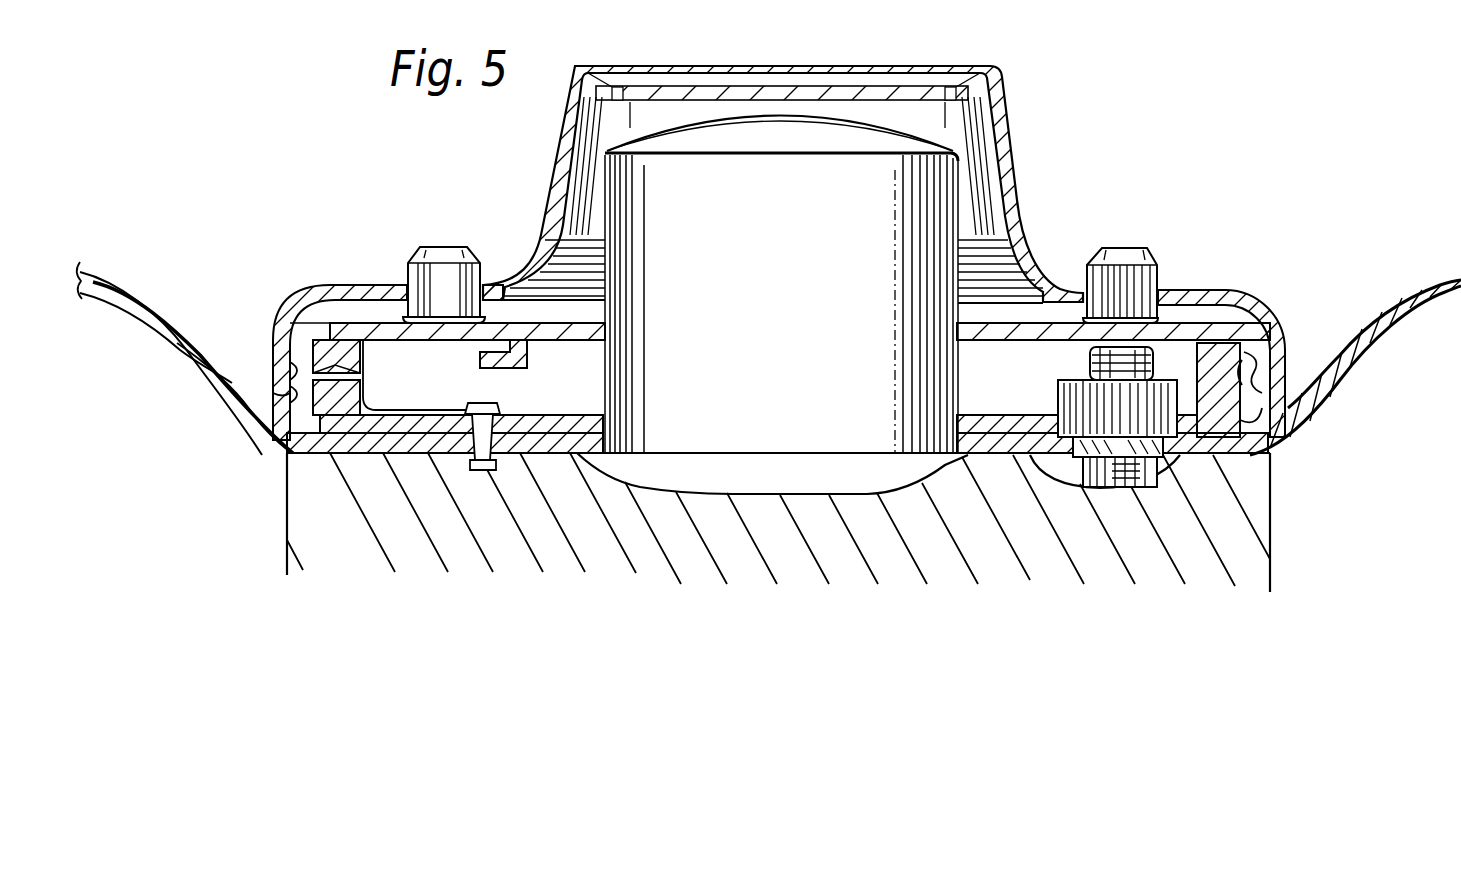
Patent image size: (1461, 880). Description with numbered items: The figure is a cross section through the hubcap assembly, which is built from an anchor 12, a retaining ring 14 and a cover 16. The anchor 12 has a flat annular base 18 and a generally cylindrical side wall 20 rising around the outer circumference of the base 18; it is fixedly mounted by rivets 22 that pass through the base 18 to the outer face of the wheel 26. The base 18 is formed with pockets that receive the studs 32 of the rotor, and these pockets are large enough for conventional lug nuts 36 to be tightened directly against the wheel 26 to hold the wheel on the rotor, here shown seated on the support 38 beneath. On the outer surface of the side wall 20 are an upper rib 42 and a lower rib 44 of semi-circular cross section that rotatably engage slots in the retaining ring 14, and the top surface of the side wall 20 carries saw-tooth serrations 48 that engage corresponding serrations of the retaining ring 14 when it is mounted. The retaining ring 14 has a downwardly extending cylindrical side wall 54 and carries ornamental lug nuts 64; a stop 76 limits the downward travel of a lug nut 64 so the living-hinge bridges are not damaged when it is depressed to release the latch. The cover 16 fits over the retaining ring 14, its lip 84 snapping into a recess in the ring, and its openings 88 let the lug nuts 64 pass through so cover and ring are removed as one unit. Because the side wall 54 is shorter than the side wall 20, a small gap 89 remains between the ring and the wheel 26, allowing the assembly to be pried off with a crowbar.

The anchor 12 is at (573, 407).
The retaining ring 14 is at (557, 318).
The cover 16 is at (1013, 165).
The base 18 is at (413, 432).
The side wall 20 is at (284, 446).
The rivets 22 is at (493, 470).
The wheel 26 is at (120, 280).
The studs 32 is at (1140, 320).
The lug nuts 36 is at (1060, 400).
The support block 38 is at (285, 493).
The upper rib 42 is at (1253, 343).
The lower rib 44 is at (1247, 360).
The saw-tooth serrations 48 is at (363, 346).
The side wall 54 is at (293, 350).
The ornamental lug nuts 64 is at (460, 252).
The stop 76 is at (507, 368).
The lip 84 is at (1338, 402).
The openings 88 is at (405, 315).
The gap 89 is at (273, 393).